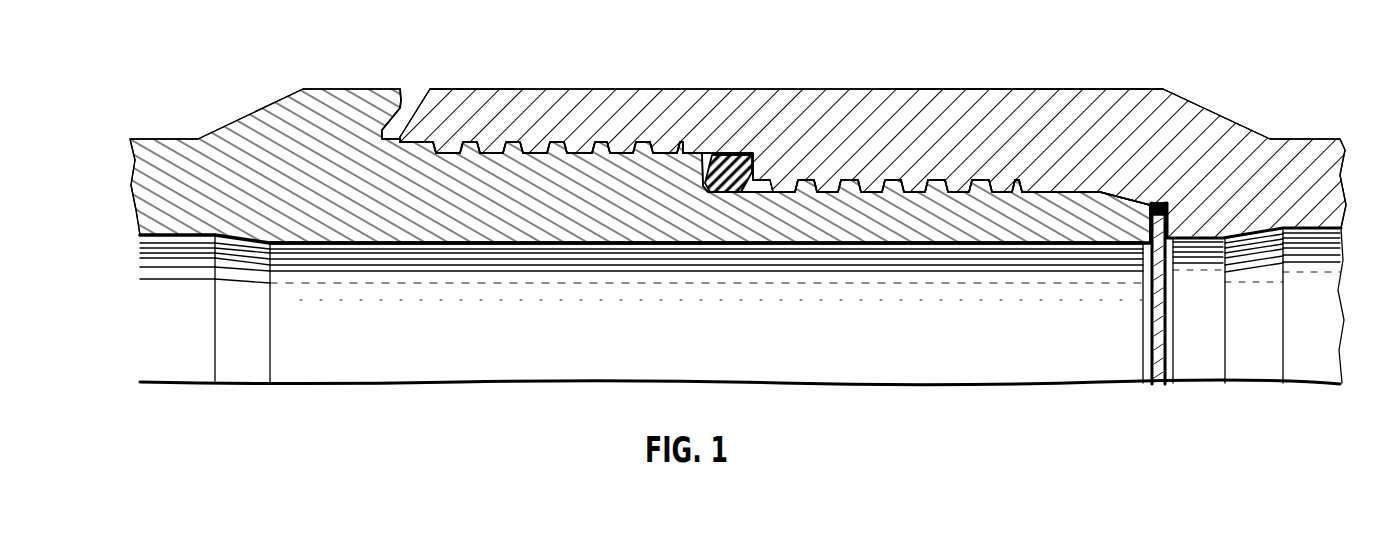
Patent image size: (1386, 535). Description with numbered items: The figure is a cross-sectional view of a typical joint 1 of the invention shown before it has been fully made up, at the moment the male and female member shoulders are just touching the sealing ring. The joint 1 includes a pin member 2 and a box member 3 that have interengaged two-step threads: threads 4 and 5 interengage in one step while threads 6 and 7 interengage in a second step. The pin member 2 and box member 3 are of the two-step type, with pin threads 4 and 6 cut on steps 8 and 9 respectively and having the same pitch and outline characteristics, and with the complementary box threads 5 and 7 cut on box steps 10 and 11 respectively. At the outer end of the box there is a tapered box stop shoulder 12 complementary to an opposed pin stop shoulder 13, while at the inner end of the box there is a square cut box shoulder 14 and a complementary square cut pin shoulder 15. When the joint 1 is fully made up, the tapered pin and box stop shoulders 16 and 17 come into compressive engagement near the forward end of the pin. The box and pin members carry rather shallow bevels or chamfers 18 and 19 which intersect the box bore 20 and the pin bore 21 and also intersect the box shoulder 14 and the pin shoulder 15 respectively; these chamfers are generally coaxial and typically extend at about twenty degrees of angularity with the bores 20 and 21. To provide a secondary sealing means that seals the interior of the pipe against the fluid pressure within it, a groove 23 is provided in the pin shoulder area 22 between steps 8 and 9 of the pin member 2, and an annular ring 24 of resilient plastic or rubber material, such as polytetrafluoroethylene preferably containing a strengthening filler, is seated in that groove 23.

The joint 1 is at (803, 68).
The pin member 2 is at (160, 150).
The box member 3 is at (1230, 133).
The pin thread 4 is at (553, 150).
The box thread 5 is at (556, 148).
The pin thread 6 is at (853, 190).
The box thread 7 is at (872, 178).
The pin step 8 is at (482, 213).
The pin step 9 is at (910, 227).
The box step 10 is at (634, 97).
The box step 11 is at (1007, 120).
The tapered box stop shoulder 12 is at (417, 96).
The pin stop shoulder 13 is at (394, 98).
The square cut box shoulder 14 is at (1192, 244).
The square cut pin shoulder 15 is at (1140, 205).
The tapered pin stop shoulder 16 is at (1100, 192).
The tapered box stop shoulder 17 is at (1127, 190).
The chamfer 18 is at (1174, 249).
The chamfer 19 is at (1145, 257).
The box bore 20 is at (1256, 305).
The pin bore 21 is at (641, 309).
The pin shoulder area 22 is at (728, 205).
The groove 23 is at (723, 193).
The annular ring 24 is at (733, 155).